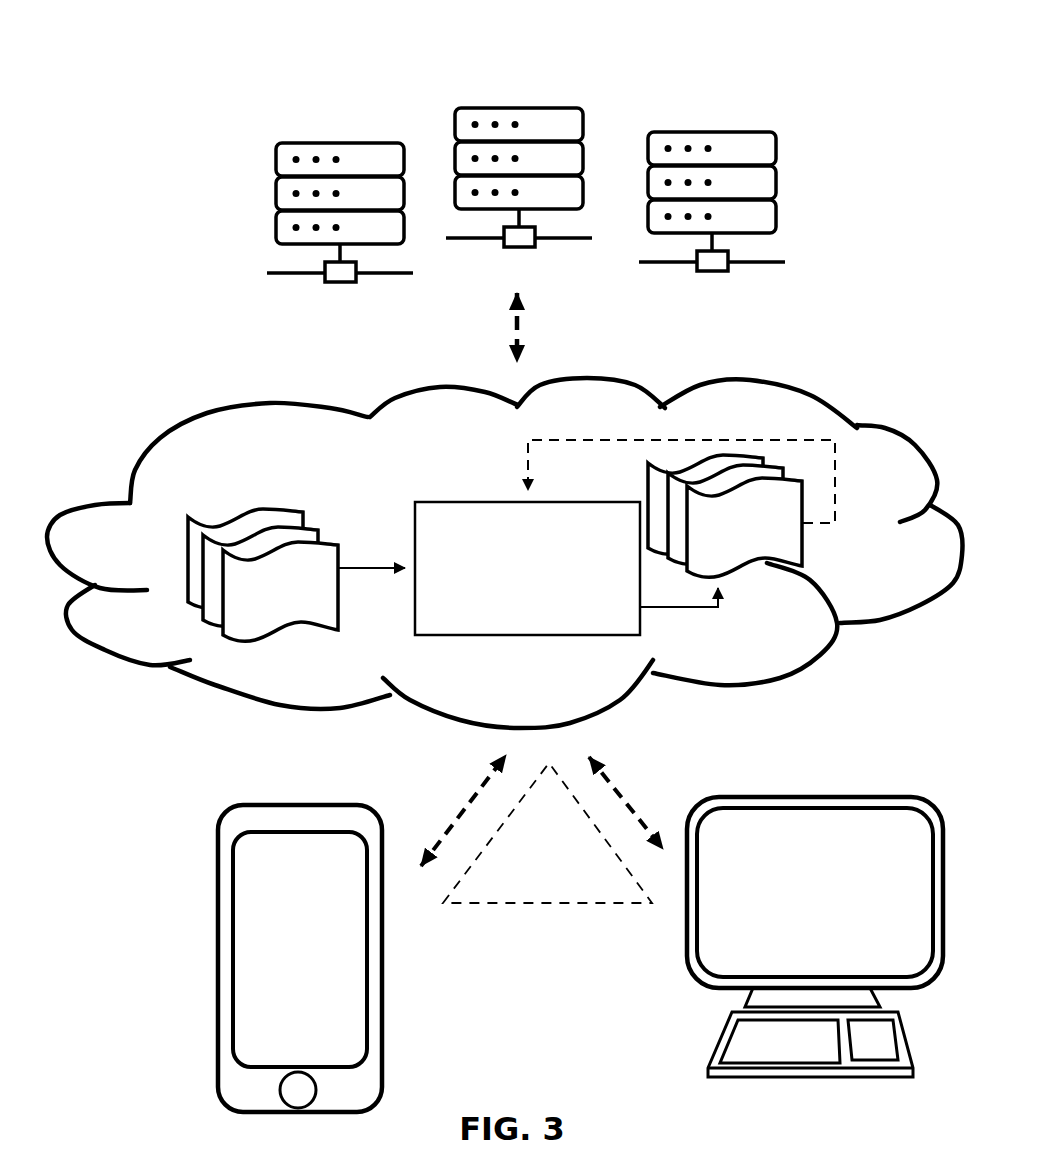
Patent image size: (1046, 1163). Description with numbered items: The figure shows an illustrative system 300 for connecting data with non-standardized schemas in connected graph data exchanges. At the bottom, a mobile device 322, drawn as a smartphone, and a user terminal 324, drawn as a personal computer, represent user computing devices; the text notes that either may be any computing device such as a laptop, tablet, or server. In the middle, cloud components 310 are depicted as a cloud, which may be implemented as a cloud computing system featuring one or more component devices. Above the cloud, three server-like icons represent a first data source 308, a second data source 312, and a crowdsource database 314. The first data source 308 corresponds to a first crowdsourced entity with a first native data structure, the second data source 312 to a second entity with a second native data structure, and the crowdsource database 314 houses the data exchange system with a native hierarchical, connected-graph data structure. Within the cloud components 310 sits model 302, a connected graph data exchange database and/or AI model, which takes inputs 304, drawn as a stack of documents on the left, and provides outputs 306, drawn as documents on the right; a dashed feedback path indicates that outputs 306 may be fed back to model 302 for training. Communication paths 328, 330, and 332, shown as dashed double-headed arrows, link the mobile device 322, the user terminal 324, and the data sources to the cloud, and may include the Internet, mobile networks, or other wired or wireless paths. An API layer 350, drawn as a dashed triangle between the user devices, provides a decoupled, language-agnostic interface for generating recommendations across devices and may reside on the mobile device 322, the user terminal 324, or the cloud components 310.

The system 300 is at (490, 21).
The model 302 is at (507, 583).
The inputs 304 is at (258, 497).
The outputs 306 is at (778, 540).
The first data source 308 is at (335, 142).
The cloud components 310 is at (507, 691).
The second data source 312 is at (525, 105).
The crowdsource database 314 is at (707, 132).
The mobile device 322 is at (290, 775).
The user terminal 324 is at (808, 781).
The communication path 328 is at (447, 788).
The communication path 330 is at (640, 784).
The communication path 332 is at (486, 350).
The API layer 350 is at (527, 858).